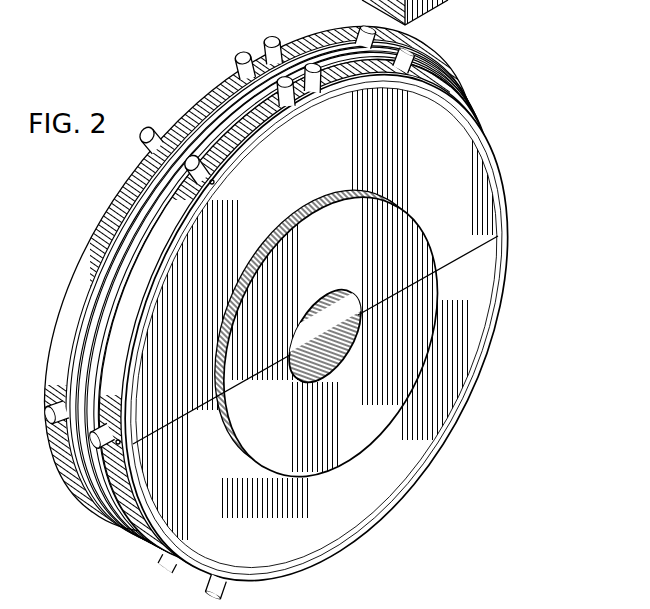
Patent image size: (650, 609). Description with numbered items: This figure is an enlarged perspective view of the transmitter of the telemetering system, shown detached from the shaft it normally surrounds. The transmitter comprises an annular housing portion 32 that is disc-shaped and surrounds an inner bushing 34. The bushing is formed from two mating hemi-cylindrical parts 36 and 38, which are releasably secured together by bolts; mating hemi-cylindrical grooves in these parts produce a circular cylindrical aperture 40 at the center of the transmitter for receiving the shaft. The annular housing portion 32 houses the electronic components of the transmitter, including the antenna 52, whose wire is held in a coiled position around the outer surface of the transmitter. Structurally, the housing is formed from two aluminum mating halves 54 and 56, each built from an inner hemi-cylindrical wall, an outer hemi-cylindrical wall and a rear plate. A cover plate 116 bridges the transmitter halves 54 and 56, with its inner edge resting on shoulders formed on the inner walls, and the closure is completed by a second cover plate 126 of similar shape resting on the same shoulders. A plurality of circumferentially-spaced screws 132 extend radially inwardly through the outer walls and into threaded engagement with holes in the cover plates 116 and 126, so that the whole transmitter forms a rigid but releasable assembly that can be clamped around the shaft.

The annular housing portion 32 is at (480, 286).
The inner bushing 34 is at (302, 197).
The hemi-cylindrical bushing part 36 is at (381, 198).
The hemi-cylindrical bushing part 38 is at (358, 418).
The circular cylindrical aperture 40 is at (337, 354).
The antenna 52 is at (100, 266).
The transmitter half 54 is at (127, 544).
The transmitter half 56 is at (478, 392).
The cover plate 116 is at (296, 202).
The second cover plate 126 is at (353, 512).
The circumferentially-spaced screws 132 is at (293, 110).